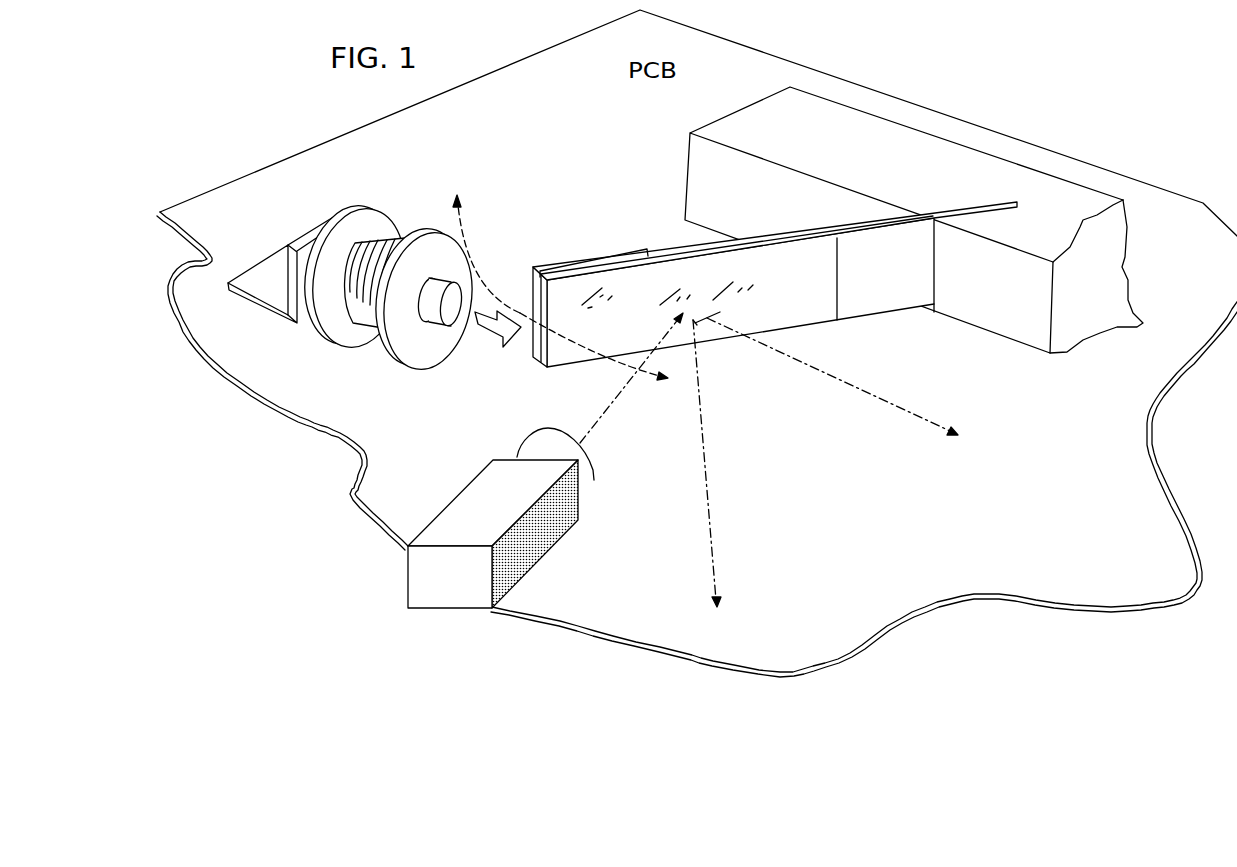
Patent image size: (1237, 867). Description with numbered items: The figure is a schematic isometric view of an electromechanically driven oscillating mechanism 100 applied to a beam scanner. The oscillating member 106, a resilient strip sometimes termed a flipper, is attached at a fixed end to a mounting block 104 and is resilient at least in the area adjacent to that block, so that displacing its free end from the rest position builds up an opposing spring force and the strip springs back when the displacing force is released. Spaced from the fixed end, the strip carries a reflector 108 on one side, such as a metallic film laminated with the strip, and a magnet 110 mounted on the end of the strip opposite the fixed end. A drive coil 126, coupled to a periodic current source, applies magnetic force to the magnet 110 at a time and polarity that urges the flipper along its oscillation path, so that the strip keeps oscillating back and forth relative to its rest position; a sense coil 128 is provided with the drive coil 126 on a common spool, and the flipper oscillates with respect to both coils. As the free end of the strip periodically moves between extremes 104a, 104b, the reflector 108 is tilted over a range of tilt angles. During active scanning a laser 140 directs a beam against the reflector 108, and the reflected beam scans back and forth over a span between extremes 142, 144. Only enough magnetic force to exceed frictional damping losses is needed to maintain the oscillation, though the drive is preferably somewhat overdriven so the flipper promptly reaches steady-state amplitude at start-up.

The oscillating mechanism 100 is at (1034, 105).
The mounting block 104 is at (858, 140).
The extreme of free end movement 104a is at (476, 241).
The extreme of free end movement 104b is at (607, 360).
The oscillating member 106 is at (764, 292).
The reflector 108 is at (723, 330).
The magnet 110 is at (583, 262).
The drive coil 126 is at (379, 305).
The sense coil 128 is at (365, 312).
The laser 140 is at (460, 513).
The extreme of scanned beam span 142 is at (710, 546).
The extreme of scanned beam span 144 is at (904, 404).